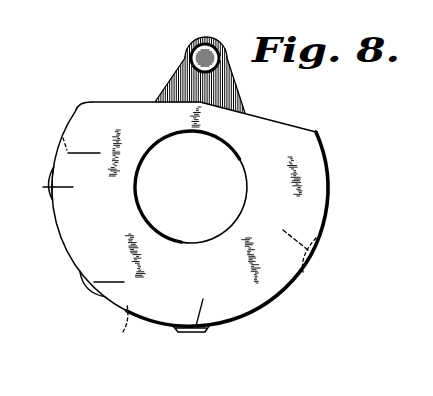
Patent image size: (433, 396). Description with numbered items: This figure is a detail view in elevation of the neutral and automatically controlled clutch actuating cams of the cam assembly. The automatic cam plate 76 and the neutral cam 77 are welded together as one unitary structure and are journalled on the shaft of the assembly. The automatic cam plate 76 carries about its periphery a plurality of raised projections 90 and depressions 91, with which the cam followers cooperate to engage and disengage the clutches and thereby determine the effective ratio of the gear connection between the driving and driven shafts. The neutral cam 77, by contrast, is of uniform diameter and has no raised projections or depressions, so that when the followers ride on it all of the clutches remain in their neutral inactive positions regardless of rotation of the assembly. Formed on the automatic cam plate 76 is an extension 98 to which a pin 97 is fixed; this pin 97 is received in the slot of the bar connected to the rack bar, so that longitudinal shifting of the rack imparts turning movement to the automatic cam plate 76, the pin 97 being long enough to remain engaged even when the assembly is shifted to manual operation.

The automatic cam plate 76 is at (170, 93).
The neutral cam 77 is at (129, 107).
The raised projections 90 is at (48, 186).
The depressions 91 is at (83, 157).
The pin 97 is at (207, 46).
The extension 98 is at (230, 62).